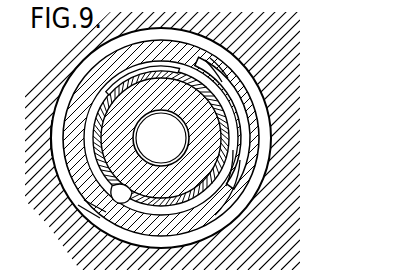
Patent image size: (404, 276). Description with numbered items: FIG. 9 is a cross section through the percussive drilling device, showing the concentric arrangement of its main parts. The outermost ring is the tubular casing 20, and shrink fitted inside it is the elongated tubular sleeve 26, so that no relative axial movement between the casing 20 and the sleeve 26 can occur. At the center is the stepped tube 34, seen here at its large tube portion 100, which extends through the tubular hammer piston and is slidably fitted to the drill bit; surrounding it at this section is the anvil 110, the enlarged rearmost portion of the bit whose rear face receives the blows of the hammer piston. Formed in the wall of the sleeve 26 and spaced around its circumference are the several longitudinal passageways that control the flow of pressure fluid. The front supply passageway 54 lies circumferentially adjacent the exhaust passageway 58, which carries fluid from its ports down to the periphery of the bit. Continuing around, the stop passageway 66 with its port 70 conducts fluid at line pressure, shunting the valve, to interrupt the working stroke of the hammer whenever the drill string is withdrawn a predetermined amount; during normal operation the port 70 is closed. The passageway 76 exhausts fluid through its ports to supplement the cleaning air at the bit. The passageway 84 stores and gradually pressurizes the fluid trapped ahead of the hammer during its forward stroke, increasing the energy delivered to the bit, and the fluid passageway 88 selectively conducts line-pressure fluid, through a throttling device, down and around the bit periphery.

The tubular casing 20 is at (244, 64).
The tubular sleeve 26 is at (240, 96).
The stepped tube 34 is at (168, 113).
The front supply passageway 54 is at (252, 134).
The exhaust passageway 58 is at (222, 218).
The stop passageway 66 is at (82, 215).
The port 70 is at (112, 190).
The passageway 76 is at (52, 138).
The passageway 84 is at (140, 72).
The fluid passageway 88 is at (212, 75).
The large tube portion 100 is at (200, 172).
The anvil 110 is at (205, 198).